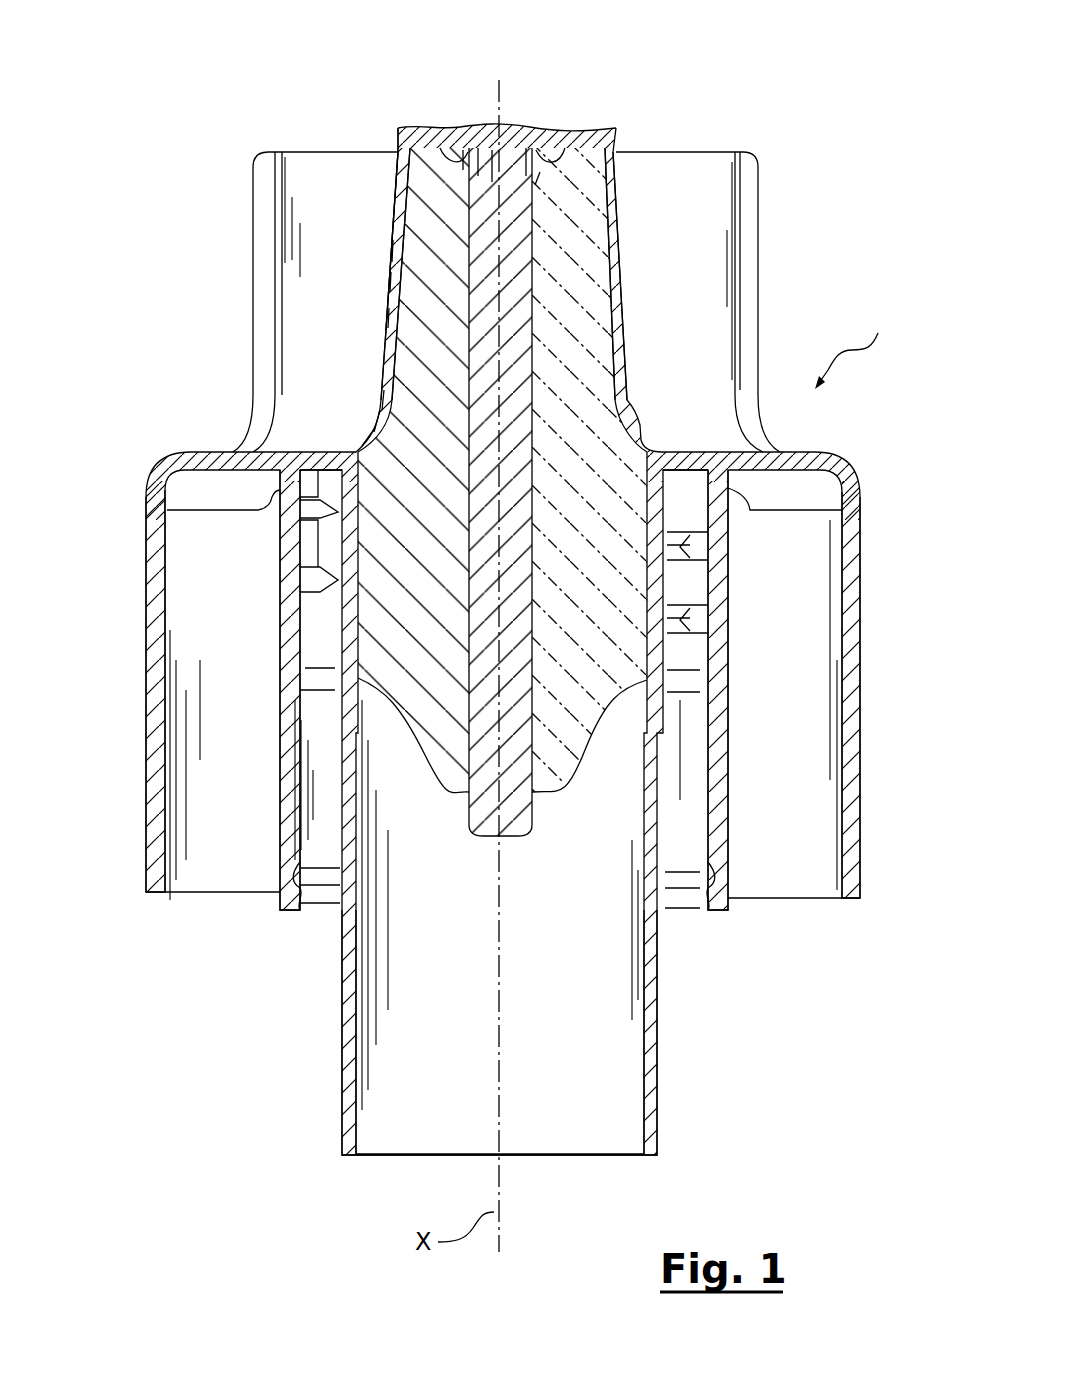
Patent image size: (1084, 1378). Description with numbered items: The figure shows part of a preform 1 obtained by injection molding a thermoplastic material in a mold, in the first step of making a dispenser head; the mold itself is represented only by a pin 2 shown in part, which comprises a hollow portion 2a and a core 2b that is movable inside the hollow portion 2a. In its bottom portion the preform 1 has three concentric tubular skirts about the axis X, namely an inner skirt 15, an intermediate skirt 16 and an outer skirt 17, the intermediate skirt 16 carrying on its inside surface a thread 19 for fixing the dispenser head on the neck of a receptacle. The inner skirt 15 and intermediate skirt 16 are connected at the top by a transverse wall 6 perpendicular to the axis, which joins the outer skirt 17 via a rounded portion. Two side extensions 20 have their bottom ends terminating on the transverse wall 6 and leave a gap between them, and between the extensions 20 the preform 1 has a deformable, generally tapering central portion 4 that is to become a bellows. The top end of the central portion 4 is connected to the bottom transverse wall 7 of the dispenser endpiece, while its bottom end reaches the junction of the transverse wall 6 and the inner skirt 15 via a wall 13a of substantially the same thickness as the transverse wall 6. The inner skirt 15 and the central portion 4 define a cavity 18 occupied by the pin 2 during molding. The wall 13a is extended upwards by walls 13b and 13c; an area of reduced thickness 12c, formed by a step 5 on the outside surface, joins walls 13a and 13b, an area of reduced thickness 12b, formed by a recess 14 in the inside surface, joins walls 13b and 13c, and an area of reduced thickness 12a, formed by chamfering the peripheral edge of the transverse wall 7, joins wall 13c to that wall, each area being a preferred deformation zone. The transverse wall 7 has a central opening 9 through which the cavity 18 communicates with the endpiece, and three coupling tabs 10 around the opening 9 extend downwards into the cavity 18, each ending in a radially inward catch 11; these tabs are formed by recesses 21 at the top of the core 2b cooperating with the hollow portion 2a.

The preform 1 is at (519, 639).
The pin 2 is at (502, 528).
The hollow portion 2a is at (550, 784).
The core 2b is at (485, 822).
The central portion 4 is at (620, 283).
The step 5 is at (377, 423).
The transverse wall 6 is at (307, 472).
The transverse wall 7 is at (567, 130).
The central opening 9 is at (504, 148).
The coupling tabs 10 is at (448, 130).
The catch 11 is at (492, 180).
The area of reduced thickness 12a is at (403, 141).
The area of reduced thickness 12b is at (392, 282).
The area of reduced thickness 12c is at (383, 400).
The wall 13a is at (375, 430).
The wall 13b is at (392, 317).
The wall 13c is at (392, 252).
The recess 14 is at (393, 243).
The inner skirt 15 is at (653, 1017).
The intermediate skirt 16 is at (720, 847).
The outer skirt 17 is at (847, 798).
The cavity 18 is at (468, 1069).
The thread 19 is at (318, 590).
The side extensions 20 is at (705, 282).
The recesses 21 is at (463, 168).